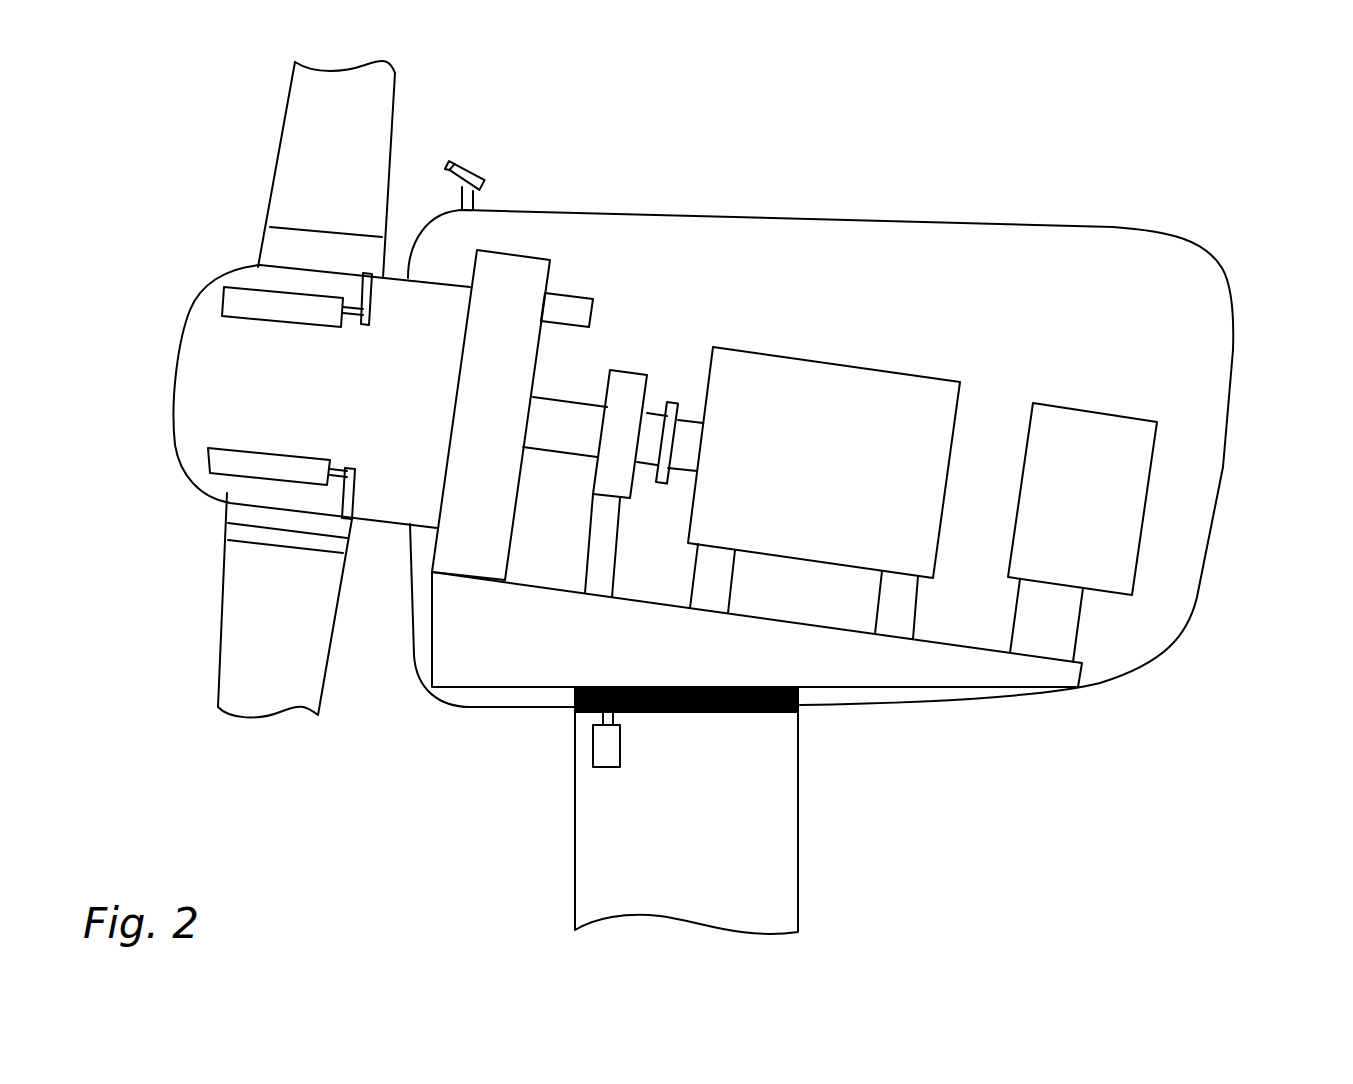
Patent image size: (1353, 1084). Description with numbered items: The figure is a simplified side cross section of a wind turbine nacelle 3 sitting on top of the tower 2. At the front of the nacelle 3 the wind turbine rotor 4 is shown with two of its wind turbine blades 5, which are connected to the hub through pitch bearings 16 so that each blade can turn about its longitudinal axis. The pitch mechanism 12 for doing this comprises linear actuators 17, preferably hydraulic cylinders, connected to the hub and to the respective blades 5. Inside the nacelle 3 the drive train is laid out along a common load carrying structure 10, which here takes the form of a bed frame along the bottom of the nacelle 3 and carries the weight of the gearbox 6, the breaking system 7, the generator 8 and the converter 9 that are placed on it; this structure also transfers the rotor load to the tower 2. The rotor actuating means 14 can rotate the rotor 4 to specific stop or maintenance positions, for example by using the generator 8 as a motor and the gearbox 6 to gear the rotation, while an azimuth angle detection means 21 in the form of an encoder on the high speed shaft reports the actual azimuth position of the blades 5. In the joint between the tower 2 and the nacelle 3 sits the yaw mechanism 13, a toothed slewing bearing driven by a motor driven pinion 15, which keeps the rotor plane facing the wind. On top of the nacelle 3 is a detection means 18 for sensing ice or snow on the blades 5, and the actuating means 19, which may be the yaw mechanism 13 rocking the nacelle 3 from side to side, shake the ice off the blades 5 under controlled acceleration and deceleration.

The tower 2 is at (768, 888).
The nacelle 3 is at (1268, 248).
The wind turbine rotor 4 is at (265, 278).
The wind turbine blades 5 is at (353, 162).
The gearbox 6 is at (510, 290).
The breaking system 7 is at (628, 392).
The generator 8 is at (788, 407).
The converter 9 is at (1103, 460).
The load carrying structure 10 is at (852, 677).
The pitch mechanism 12 is at (187, 503).
The yaw mechanism 13 is at (647, 725).
The rotor actuating means 14 is at (563, 307).
The motor driven pinion 15 is at (607, 752).
The pitch bearings 16 is at (253, 533).
The linear actuators 17 is at (240, 302).
The detection means 18 is at (468, 170).
The actuating means 19 is at (277, 495).
The azimuth angle detection means 21 is at (673, 402).